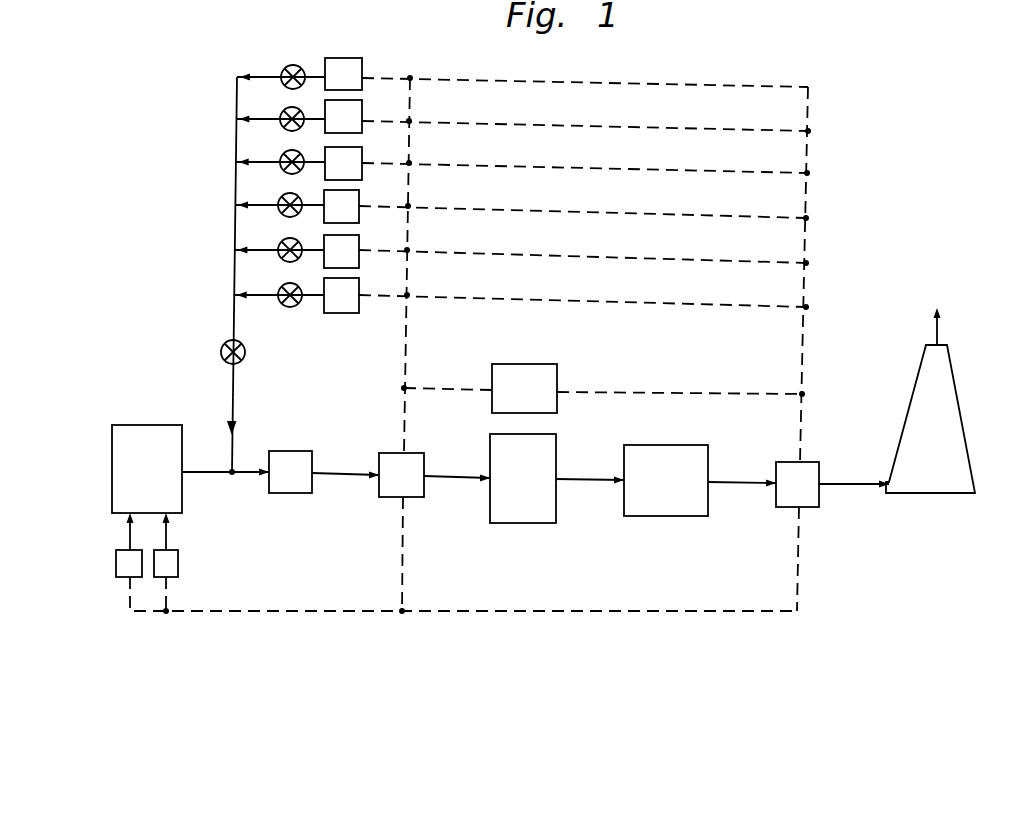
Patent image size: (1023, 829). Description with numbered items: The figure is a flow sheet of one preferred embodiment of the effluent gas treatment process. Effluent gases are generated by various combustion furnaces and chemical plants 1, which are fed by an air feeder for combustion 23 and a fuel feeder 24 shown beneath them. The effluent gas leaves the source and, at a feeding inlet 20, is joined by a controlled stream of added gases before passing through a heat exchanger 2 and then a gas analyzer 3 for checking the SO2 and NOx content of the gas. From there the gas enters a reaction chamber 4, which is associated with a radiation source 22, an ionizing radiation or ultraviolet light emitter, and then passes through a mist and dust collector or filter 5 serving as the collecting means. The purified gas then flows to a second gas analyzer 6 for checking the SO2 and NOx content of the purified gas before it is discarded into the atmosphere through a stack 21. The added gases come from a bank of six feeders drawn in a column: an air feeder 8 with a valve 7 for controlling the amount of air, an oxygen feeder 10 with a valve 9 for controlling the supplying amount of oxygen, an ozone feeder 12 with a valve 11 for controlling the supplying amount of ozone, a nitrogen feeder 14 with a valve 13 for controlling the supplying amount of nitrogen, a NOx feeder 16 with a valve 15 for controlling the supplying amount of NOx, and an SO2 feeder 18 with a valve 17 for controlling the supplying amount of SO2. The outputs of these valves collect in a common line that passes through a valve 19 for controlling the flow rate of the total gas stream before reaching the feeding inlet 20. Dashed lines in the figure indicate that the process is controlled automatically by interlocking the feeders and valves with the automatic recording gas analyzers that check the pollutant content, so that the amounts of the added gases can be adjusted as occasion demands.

The combustion furnaces and chemical plants 1 is at (153, 424).
The heat exchanger 2 is at (298, 451).
The gas analyzer 3 is at (413, 453).
The reaction chamber 4 is at (557, 441).
The mist and dust collector 5 is at (675, 445).
The gas analyzer 6 is at (810, 462).
The valve 7 is at (286, 86).
The air feeder 8 is at (362, 64).
The valve 9 is at (285, 128).
The oxygen feeder 10 is at (362, 107).
The valve 11 is at (285, 171).
The ozone feeder 12 is at (362, 152).
The valve 13 is at (283, 214).
The nitrogen feeder 14 is at (359, 195).
The valve 15 is at (283, 259).
The NOx feeder 16 is at (359, 240).
The valve 17 is at (283, 304).
The SO2 feeder 18 is at (359, 284).
The valve 19 is at (245, 353).
The feeding inlet 20 is at (232, 473).
The stack 21 is at (950, 362).
The radiation source 22 is at (557, 369).
The air feeder for combustion 23 is at (116, 560).
The fuel feeder 24 is at (178, 562).